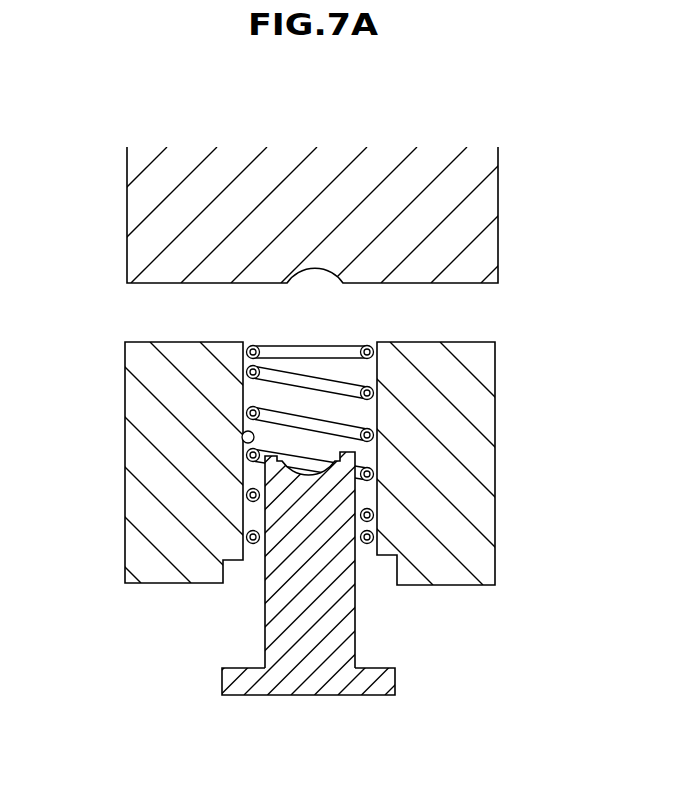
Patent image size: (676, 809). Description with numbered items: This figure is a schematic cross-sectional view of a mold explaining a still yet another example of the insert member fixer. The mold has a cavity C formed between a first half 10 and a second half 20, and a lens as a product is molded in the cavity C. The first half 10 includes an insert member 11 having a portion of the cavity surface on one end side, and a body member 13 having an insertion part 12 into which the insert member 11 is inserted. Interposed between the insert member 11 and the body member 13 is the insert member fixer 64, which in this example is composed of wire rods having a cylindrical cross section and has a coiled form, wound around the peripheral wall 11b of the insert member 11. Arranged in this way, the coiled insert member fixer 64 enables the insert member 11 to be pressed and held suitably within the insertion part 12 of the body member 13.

The second half 20 is at (497, 218).
The first half 10 is at (338, 463).
The body member 13 is at (135, 392).
The insertion part 12 is at (242, 441).
The insert member fixer 64 is at (350, 407).
The insert member 11 is at (331, 605).
The peripheral wall 11b is at (265, 593).
The cavity C is at (313, 269).